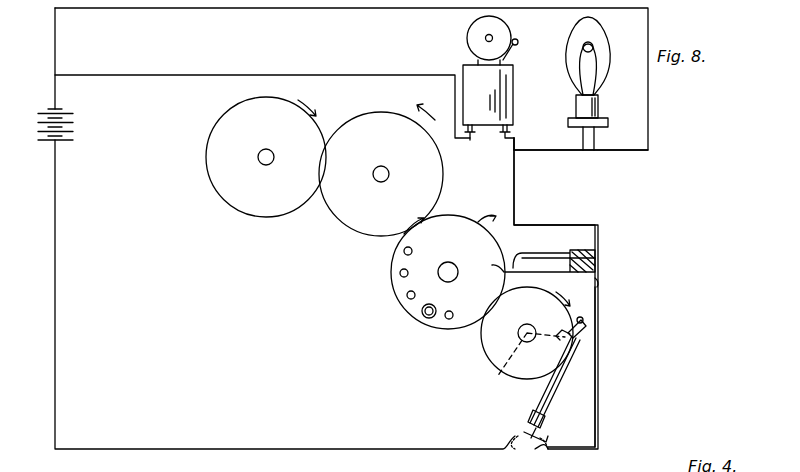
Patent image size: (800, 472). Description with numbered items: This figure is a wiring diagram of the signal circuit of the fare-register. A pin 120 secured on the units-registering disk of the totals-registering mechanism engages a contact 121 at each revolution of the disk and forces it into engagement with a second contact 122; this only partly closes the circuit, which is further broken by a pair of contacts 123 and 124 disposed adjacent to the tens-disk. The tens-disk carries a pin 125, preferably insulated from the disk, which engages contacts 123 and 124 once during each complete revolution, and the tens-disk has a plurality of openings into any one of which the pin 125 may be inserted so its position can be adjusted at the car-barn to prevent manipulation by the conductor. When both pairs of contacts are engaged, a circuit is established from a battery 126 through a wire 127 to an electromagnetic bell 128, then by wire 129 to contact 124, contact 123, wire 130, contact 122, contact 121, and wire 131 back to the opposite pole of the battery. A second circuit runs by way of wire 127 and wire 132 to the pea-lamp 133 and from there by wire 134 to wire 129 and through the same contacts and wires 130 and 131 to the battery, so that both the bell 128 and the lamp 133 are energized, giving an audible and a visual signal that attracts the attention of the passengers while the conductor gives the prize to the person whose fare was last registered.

The pin 120 is at (520, 343).
The contact 121 is at (580, 318).
The second contact 122 is at (582, 333).
The contact 123 is at (492, 267).
The contact 124 is at (540, 248).
The pin 125 is at (427, 315).
The battery 126 is at (47, 128).
The wire 127 is at (55, 97).
The electromagnetic bell 128 is at (480, 40).
The wire 129 is at (514, 190).
The wire 130 is at (598, 375).
The wire 131 is at (296, 443).
The wire 132 is at (55, 41).
The pea-lamp 133 is at (596, 108).
The wire 134 is at (546, 142).